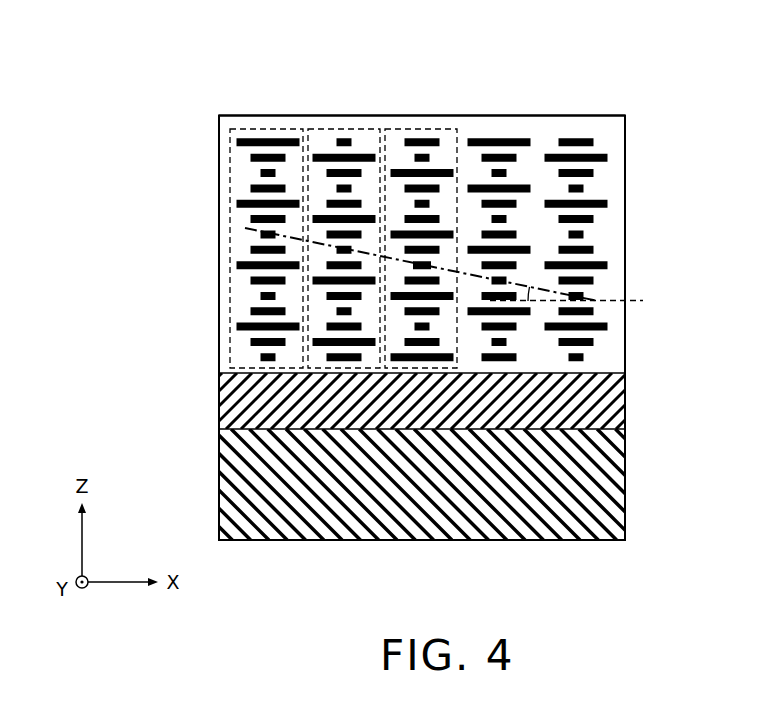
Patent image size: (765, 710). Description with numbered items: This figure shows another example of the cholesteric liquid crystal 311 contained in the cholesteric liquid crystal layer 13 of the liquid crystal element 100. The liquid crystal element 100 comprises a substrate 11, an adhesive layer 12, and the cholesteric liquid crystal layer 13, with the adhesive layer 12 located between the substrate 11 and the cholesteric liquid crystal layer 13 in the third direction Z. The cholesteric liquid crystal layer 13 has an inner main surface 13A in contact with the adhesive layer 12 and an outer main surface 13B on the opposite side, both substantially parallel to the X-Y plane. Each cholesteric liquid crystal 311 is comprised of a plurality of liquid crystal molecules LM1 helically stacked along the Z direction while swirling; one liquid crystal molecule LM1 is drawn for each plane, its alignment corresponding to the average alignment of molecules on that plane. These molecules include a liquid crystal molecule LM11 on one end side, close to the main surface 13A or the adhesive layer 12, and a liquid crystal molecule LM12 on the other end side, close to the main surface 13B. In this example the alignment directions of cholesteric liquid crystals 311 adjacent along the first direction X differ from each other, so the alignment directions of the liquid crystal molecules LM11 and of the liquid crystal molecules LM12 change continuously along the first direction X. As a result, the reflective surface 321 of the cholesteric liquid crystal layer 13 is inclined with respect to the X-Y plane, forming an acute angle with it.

The liquid crystal element 100 is at (401, 331).
The substrate 11 is at (625, 477).
The adhesive layer 12 is at (625, 398).
The cholesteric liquid crystal layer 13 is at (425, 321).
The main surface (inner surface) 13A is at (530, 373).
The main surface (outer surface) 13B is at (543, 116).
The cholesteric liquid crystal 311 is at (445, 122).
The reflective surface 321 is at (590, 298).
The liquid crystal molecule LM1 is at (310, 323).
The liquid crystal molecule LM11 is at (357, 474).
The liquid crystal molecule LM12 is at (415, 138).